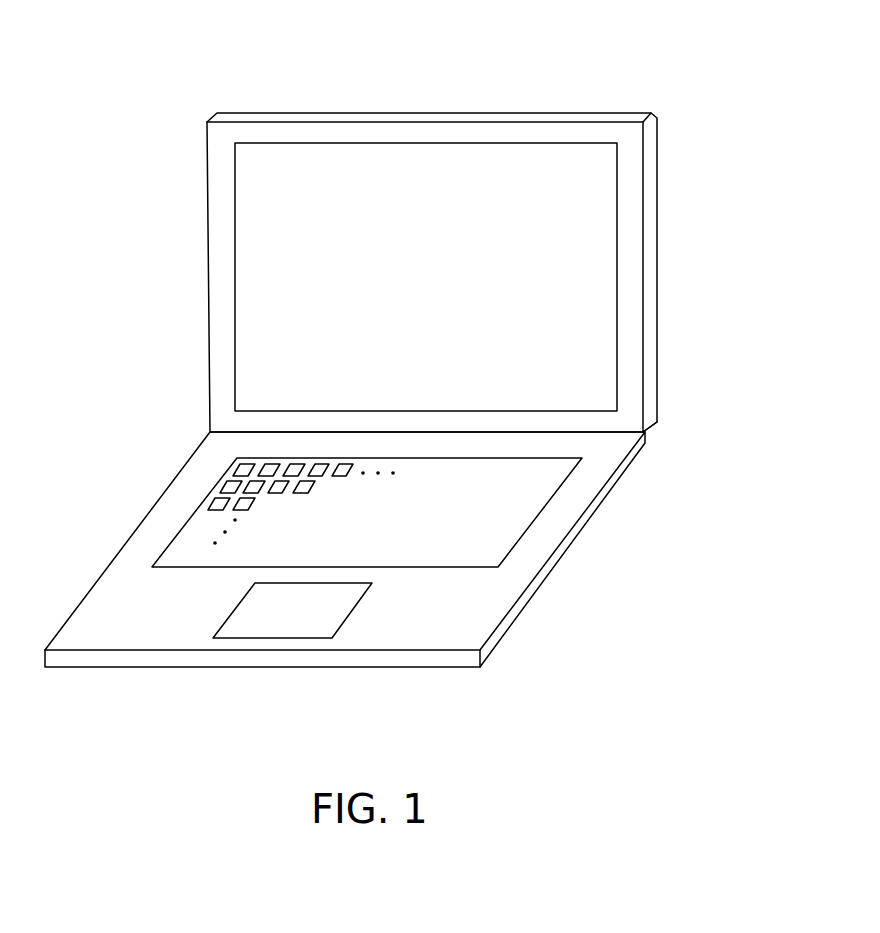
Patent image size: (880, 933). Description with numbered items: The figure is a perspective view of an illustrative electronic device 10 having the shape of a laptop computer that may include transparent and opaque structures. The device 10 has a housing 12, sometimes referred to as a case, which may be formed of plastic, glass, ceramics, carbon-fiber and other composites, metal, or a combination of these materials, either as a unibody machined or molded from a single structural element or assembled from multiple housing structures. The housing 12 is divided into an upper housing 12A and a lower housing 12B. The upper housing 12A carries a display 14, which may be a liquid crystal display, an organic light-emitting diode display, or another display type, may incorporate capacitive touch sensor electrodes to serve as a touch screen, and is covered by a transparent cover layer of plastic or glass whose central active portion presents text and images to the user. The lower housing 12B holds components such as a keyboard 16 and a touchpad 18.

The electronic device 10 is at (393, 376).
The housing 12 is at (379, 425).
The upper housing 12A is at (424, 272).
The lower housing 12B is at (336, 579).
The display 14 is at (593, 257).
The keyboard 16 is at (543, 508).
The touchpad 18 is at (297, 623).